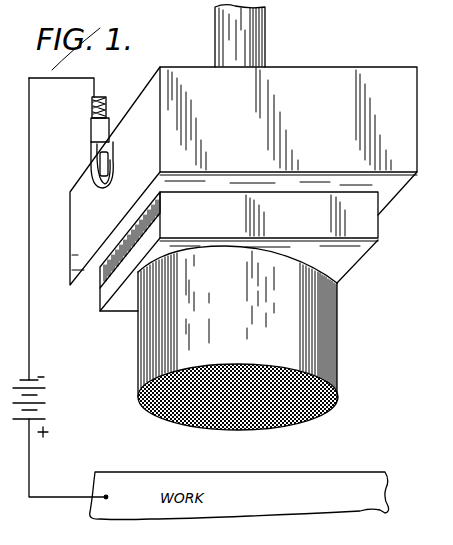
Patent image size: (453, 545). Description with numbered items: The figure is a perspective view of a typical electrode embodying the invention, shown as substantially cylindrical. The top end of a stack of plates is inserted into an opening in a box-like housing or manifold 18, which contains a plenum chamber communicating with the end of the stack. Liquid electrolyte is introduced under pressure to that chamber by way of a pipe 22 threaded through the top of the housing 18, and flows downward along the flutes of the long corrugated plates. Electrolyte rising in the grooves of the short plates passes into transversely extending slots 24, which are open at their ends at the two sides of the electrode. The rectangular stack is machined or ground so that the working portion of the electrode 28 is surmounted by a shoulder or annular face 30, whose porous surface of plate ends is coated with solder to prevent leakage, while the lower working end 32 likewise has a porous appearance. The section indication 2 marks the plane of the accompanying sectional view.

The section line 2- 2 is at (282, 25).
The housing 18 is at (303, 117).
The pipe 22 is at (255, 38).
The transversely extending slots 24 is at (100, 292).
The working portion of the electrode 28 is at (317, 353).
The annular face 30 is at (120, 303).
The lower working end 32 is at (248, 431).